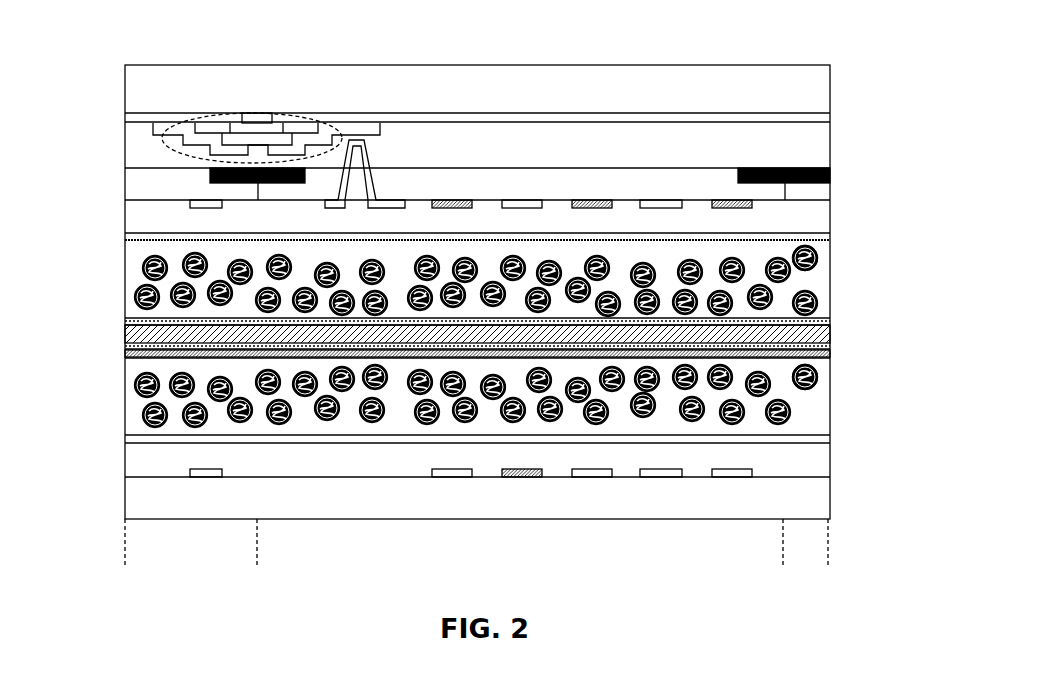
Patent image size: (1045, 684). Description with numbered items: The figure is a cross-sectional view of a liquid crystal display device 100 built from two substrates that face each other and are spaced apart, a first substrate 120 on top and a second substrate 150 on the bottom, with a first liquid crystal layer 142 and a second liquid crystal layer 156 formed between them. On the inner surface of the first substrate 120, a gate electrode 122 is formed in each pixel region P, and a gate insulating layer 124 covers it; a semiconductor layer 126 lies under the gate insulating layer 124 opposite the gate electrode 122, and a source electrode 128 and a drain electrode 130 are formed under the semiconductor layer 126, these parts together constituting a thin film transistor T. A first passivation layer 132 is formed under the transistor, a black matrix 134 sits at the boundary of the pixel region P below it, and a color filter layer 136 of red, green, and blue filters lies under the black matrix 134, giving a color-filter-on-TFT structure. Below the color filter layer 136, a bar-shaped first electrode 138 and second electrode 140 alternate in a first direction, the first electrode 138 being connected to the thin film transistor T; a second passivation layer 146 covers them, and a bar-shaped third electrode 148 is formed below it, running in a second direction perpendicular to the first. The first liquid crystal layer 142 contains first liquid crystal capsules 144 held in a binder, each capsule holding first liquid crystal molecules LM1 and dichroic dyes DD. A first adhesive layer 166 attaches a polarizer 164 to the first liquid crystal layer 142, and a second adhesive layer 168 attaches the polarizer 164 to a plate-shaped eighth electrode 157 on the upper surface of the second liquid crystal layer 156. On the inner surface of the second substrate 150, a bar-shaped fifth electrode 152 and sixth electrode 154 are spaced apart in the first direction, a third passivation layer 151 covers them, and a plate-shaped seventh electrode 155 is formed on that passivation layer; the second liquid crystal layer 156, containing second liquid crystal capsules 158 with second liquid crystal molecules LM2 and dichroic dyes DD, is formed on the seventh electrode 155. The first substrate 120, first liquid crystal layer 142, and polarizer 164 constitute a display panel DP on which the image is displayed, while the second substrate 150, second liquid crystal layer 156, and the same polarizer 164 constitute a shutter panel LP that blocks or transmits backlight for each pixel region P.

The liquid crystal display device 100 is at (501, 37).
The first substrate 120 is at (815, 113).
The gate electrode 122 is at (257, 117).
The gate insulating layer 124 is at (292, 118).
The semiconductor layer 126 is at (222, 132).
The source electrode 128 is at (163, 137).
The thin film transistor T is at (262, 122).
The drain electrode 130 is at (340, 139).
The first passivation layer 132 is at (617, 133).
The black matrix 134 is at (763, 167).
The color filter layer 136 is at (490, 178).
The first electrode 138 is at (398, 203).
The second electrode 140 is at (455, 200).
The first liquid crystal layer 142 is at (528, 316).
The first liquid crystal capsules 144 is at (533, 278).
The second passivation layer 146 is at (818, 220).
The third electrode 148 is at (533, 231).
The first liquid crystal molecules LM1 is at (813, 252).
The dichroic dyes DD is at (816, 268).
The second substrate 150 is at (807, 513).
The third passivation layer 151 is at (822, 463).
The fifth electrode 152 is at (452, 478).
The sixth electrode 154 is at (522, 478).
The seventh electrode 155 is at (822, 438).
The second liquid crystal layer 156 is at (528, 396).
The eighth electrode 157 is at (832, 356).
The second liquid crystal capsules 158 is at (533, 393).
The second liquid crystal molecules LM2 is at (817, 372).
The polarizer 164 is at (818, 332).
The first adhesive layer 166 is at (818, 322).
The second adhesive layer 168 is at (830, 347).
The display panel DP is at (110, 212).
The shutter panel LP is at (110, 402).
The pixel region P is at (257, 554).